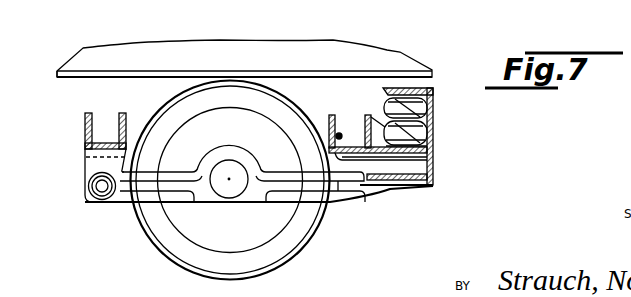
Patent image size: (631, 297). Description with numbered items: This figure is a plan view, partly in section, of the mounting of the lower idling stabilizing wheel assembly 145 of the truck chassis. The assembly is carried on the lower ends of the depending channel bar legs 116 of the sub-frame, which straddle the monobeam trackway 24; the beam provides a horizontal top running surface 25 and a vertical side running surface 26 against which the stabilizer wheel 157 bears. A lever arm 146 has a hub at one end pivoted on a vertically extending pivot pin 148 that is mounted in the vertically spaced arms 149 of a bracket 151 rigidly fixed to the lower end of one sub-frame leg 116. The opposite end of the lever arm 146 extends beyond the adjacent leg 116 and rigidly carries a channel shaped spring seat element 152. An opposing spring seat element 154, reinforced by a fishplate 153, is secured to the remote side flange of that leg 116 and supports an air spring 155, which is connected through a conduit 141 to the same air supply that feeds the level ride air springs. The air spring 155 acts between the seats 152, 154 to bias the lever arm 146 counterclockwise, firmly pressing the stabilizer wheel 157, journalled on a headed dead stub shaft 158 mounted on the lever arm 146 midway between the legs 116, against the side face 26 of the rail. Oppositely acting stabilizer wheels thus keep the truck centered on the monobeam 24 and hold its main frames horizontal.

The monobeam trackway 24 is at (325, 62).
The top running surface 25 is at (213, 55).
The side running surfaces 26 is at (62, 80).
The channel bar legs 116 is at (85, 135).
The conduits 141 is at (340, 134).
The stabilizing wheel assembly 145 is at (127, 213).
The lever arm 146 is at (340, 198).
The pivot pin 148 is at (100, 197).
The arms 149 is at (93, 162).
The bracket 151 is at (85, 178).
The channel shaped spring seat element 152 is at (432, 115).
The fishplate 153 is at (430, 148).
The opposing spring seat element 154 is at (382, 158).
The air spring 155 is at (432, 135).
The stabilizer wheel 157 is at (275, 248).
The headed dead stub shaft 158 is at (223, 188).